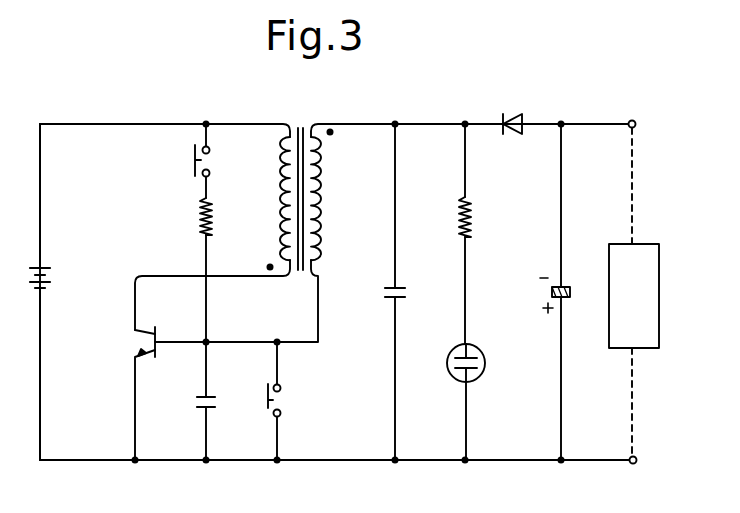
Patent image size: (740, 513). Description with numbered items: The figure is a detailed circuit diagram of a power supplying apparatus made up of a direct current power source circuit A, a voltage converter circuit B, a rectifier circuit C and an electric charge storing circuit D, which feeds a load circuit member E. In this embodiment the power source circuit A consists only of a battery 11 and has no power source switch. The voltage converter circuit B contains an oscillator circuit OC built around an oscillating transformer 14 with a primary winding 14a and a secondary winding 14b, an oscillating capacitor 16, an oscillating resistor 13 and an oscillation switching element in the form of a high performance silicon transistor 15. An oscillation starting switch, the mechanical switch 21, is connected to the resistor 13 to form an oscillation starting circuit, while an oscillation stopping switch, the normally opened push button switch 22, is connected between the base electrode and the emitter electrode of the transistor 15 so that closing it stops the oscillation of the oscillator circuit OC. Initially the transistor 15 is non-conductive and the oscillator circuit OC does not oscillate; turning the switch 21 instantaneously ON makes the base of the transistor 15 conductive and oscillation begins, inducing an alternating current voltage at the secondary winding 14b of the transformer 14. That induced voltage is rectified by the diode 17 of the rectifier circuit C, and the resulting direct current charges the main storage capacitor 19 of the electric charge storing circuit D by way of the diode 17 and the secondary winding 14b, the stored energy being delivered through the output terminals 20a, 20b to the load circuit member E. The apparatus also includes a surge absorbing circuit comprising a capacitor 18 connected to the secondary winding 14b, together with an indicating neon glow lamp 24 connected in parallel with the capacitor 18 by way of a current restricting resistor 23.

The battery 11 is at (54, 284).
The oscillating resistor 13 is at (200, 222).
The oscillating transformer 14 is at (302, 167).
The primary winding 14a is at (276, 214).
The secondary winding 14b is at (324, 224).
The silicon transistor 15 is at (134, 341).
The oscillating capacitor 16 is at (200, 410).
The diode 17 is at (509, 116).
The capacitor 18 is at (388, 298).
The main storage capacitor 19 is at (567, 297).
The output terminal 20a is at (632, 116).
The output terminal 20b is at (633, 464).
The mechanical switch 21 is at (192, 160).
The push button switch 22 is at (268, 404).
The current restricting resistor 23 is at (459, 226).
The neon glow lamp 24 is at (455, 381).
The direct current power source circuit A is at (34, 296).
The voltage converter circuit B is at (247, 116).
The rectifier circuit C is at (529, 110).
The electric charge storing circuit D is at (538, 440).
The load circuit member E is at (644, 238).
The oscillator circuit OC is at (229, 142).